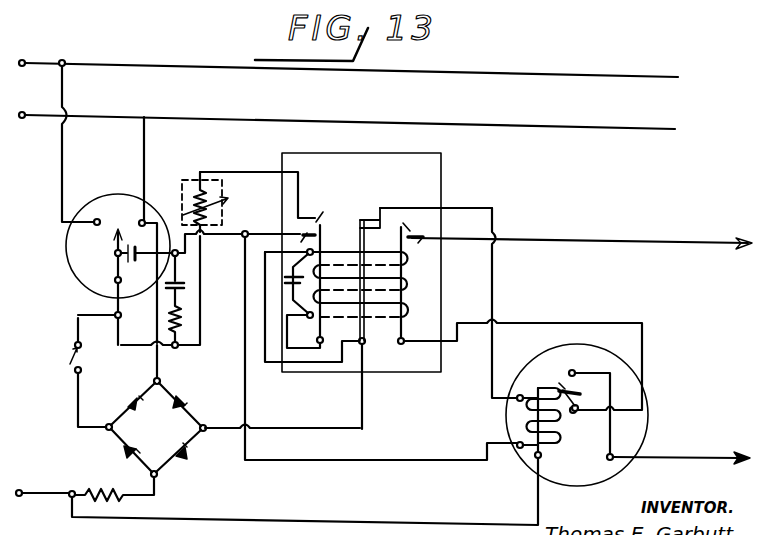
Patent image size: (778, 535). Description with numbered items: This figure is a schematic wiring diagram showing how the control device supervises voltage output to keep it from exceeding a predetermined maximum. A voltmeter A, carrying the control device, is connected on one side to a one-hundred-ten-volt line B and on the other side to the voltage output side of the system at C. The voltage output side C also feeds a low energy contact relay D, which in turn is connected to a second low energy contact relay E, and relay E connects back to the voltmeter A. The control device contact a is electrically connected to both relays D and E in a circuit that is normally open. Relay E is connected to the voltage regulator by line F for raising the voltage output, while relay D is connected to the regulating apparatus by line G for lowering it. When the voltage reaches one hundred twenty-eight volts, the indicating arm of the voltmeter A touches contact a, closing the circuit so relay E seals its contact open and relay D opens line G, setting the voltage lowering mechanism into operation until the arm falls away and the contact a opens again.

The voltmeter A is at (168, 260).
The control device contact a is at (138, 257).
The 110-volt line B is at (351, 141).
The voltage output side C is at (65, 500).
The low energy contact relay D is at (586, 487).
The low energy contact relay E is at (371, 352).
The line F is at (582, 232).
The line G is at (681, 451).